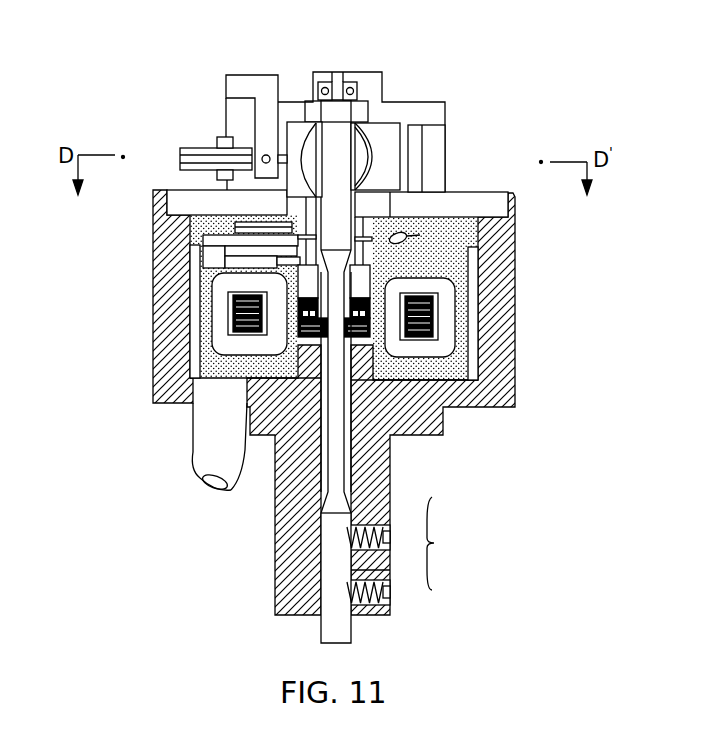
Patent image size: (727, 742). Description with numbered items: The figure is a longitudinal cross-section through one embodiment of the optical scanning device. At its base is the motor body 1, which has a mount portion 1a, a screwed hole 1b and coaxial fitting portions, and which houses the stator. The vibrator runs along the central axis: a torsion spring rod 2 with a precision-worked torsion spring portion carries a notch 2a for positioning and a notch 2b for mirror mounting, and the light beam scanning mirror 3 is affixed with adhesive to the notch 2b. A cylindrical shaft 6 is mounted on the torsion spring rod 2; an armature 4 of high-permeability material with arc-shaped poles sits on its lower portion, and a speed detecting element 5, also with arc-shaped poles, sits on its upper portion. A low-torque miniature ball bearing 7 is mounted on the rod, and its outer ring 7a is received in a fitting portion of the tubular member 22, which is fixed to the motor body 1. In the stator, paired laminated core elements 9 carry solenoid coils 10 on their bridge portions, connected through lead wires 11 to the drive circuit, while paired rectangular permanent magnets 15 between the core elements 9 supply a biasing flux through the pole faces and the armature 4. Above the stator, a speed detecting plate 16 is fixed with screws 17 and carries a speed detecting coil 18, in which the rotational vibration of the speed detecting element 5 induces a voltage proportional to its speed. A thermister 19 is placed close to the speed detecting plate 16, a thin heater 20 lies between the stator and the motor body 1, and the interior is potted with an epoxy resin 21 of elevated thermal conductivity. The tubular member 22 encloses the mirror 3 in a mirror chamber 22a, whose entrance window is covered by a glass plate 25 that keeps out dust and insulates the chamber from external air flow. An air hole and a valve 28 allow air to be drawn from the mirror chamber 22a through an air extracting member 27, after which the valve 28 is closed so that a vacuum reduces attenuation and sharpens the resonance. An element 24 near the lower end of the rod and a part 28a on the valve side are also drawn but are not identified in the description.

The motor body 1 is at (278, 568).
The mount portion 1a is at (449, 543).
The screwed hole 1b is at (375, 613).
The torsion spring rod 2 is at (325, 112).
The notch for positioning 2a is at (351, 570).
The notch for mirror mounting 2b is at (348, 150).
The mirror 3 is at (362, 167).
The armature 4 is at (382, 340).
The speed detecting element 5 is at (360, 234).
The cylindrical shaft 6 is at (350, 281).
The ball bearing 7 is at (357, 90).
The outer ring 7a is at (312, 103).
The core elements 9 is at (237, 318).
The solenoid coils 10 is at (237, 347).
The lead wires 11 is at (203, 442).
The permanent magnets 15 is at (298, 353).
The speed detecting plate 16 is at (223, 242).
The screws 17 is at (302, 257).
The speed detecting coil 18 is at (267, 226).
The thermister 19 is at (406, 236).
The heater 20 is at (193, 292).
The epoxy resin 21 is at (417, 380).
The tubular member 22 is at (230, 103).
The mirror chamber 22a is at (392, 140).
The spring 24 is at (382, 530).
The glass plate 25 is at (415, 177).
The air extracting member 27 is at (183, 146).
The valve 28 is at (236, 80).
The pin 28a is at (264, 156).